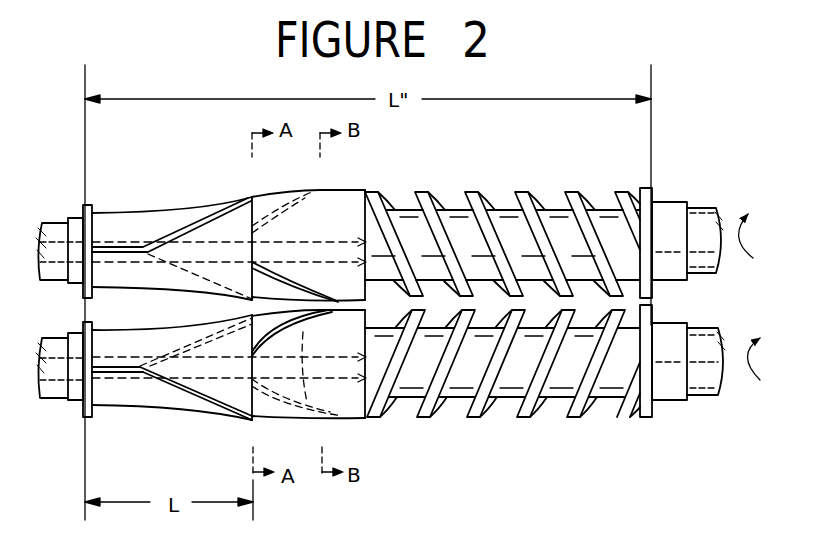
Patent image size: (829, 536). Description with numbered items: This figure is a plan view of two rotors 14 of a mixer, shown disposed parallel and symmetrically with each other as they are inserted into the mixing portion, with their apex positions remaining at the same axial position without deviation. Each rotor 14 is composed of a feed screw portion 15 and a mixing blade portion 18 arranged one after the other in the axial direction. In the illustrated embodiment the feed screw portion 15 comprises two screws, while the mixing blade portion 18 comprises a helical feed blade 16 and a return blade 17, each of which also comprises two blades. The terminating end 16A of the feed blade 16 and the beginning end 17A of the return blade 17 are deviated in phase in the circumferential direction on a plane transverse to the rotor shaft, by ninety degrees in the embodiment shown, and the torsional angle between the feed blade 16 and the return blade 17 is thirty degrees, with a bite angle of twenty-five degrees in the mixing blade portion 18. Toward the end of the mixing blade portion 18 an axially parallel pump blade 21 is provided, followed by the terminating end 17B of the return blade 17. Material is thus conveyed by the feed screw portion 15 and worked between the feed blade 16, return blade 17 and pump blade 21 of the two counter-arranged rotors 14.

The rotor 14 is at (502, 304).
The feed screw portion 15 is at (593, 204).
The helical feed blade 16 is at (302, 285).
The terminating end of the feed blade 16A is at (252, 352).
The return blade 17 is at (182, 272).
The beginning end of the return blade 17A is at (255, 420).
The terminating end of the return blade 17B is at (140, 375).
The mixing blade portion 18 is at (360, 190).
The pump blade 21 is at (125, 256).